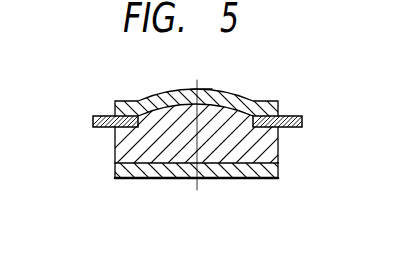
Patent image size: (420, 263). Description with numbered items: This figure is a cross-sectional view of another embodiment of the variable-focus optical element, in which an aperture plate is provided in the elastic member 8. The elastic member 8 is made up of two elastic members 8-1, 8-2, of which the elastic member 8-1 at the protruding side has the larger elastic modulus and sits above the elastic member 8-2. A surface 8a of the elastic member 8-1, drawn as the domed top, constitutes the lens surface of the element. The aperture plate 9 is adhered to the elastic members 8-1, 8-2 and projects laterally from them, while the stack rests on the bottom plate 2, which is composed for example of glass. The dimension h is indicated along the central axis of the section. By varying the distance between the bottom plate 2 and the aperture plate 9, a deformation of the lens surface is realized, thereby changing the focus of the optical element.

The bottom plate 2 is at (115, 172).
The elastic member 8 is at (237, 121).
The elastic member 8-1 is at (278, 102).
The elastic member 8-2 is at (276, 144).
The surface 8a is at (212, 88).
The aperture plate 9 is at (93, 122).
The height h is at (197, 149).